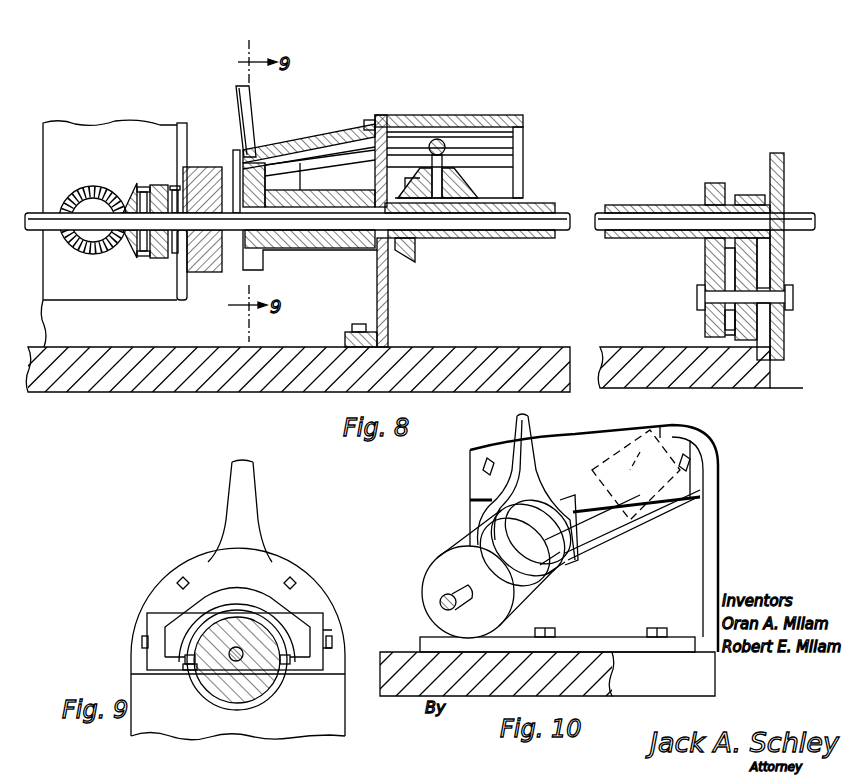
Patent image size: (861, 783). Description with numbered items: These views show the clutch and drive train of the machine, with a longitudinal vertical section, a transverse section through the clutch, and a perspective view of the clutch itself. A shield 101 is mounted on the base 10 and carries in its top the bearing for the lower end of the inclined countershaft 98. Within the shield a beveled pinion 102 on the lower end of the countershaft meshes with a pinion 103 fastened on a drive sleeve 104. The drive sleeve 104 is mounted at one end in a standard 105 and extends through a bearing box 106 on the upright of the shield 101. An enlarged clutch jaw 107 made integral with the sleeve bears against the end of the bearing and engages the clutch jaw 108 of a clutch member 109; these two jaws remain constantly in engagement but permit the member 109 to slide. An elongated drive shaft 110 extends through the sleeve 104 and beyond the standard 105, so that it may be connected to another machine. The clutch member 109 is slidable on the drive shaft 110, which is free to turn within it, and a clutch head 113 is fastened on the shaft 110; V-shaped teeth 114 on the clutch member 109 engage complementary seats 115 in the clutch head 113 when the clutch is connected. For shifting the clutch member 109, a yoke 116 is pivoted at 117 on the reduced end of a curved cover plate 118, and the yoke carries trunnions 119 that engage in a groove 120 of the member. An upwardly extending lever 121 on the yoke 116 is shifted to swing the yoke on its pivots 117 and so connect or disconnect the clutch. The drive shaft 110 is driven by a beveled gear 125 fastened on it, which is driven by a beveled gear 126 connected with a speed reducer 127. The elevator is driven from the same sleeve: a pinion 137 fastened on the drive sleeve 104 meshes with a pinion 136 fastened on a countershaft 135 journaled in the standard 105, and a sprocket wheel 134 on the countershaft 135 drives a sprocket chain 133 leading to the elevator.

In FIG. 8, the base 10 is at (236, 385).
In FIG. 10, the base 10 is at (403, 690).
In FIG. 8, the countershaft 98 is at (440, 139).
In FIG. 8, the shield 101 is at (495, 120).
In FIG. 10, the shield 101 is at (698, 553).
In FIG. 8, the beveled pinion 102 is at (480, 183).
In FIG. 8, the pinion 103 is at (407, 252).
In FIG. 8, the drive sleeve 104 is at (489, 240).
In FIG. 8, the standard 105 is at (742, 193).
In FIG. 8, the bearing box 106 is at (355, 250).
In FIG. 10, the bearing box 106 is at (642, 450).
In FIG. 8, the clutch jaw 107 is at (322, 200).
In FIG. 10, the clutch jaw 107 is at (621, 520).
In FIG. 8, the clutch jaw 108 is at (299, 248).
In FIG. 10, the clutch jaw 108 is at (636, 475).
In FIG. 8, the clutch member 109 is at (276, 166).
In FIG. 10, the clutch member 109 is at (513, 515).
In FIG. 8, the drive shaft 110 is at (58, 232).
In FIG. 9, the drive shaft 110 is at (236, 663).
In FIG. 10, the drive shaft 110 is at (440, 596).
In FIG. 8, the clutch head 113 is at (201, 167).
In FIG. 9, the clutch head 113 is at (212, 630).
In FIG. 10, the clutch head 113 is at (438, 559).
In FIG. 8, the V-shaped teeth 114 is at (236, 178).
In FIG. 10, the V-shaped teeth 114 is at (541, 572).
In FIG. 8, the seats 115 is at (176, 174).
In FIG. 10, the seats 115 is at (512, 566).
In FIG. 9, the yoke 116 is at (295, 600).
In FIG. 10, the yoke 116 is at (525, 466).
In FIG. 9, the pivot 117 is at (330, 640).
In FIG. 10, the pivot 117 is at (580, 526).
In FIG. 8, the curved cover plate 118 is at (350, 136).
In FIG. 9, the curved cover plate 118 is at (250, 597).
In FIG. 10, the curved cover plate 118 is at (668, 485).
In FIG. 9, the trunnions 119 is at (186, 672).
In FIG. 9, the groove 120 is at (262, 690).
In FIG. 8, the lever 121 is at (246, 121).
In FIG. 9, the lever 121 is at (250, 485).
In FIG. 10, the lever 121 is at (518, 417).
In FIG. 8, the beveled gear 125 is at (133, 262).
In FIG. 8, the beveled gear 126 is at (101, 186).
In FIG. 8, the speed reducer 127 is at (98, 128).
In FIG. 8, the sprocket chain 133 is at (784, 185).
In FIG. 8, the sprocket wheel 134 is at (784, 338).
In FIG. 8, the countershaft 135 is at (720, 297).
In FIG. 8, the pinion 136 is at (712, 321).
In FIG. 8, the pinion 137 is at (705, 194).